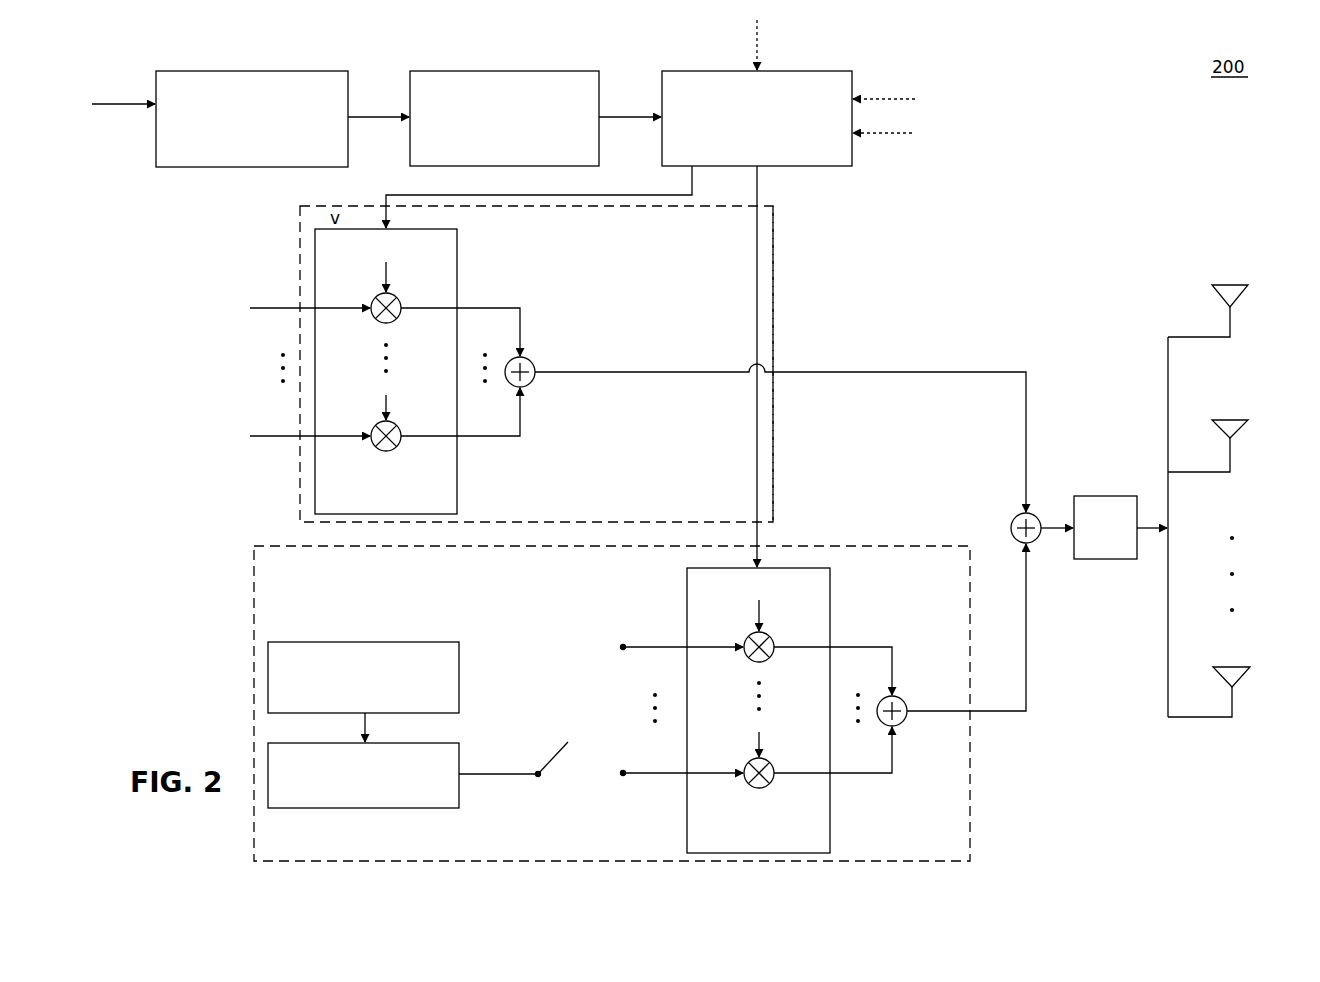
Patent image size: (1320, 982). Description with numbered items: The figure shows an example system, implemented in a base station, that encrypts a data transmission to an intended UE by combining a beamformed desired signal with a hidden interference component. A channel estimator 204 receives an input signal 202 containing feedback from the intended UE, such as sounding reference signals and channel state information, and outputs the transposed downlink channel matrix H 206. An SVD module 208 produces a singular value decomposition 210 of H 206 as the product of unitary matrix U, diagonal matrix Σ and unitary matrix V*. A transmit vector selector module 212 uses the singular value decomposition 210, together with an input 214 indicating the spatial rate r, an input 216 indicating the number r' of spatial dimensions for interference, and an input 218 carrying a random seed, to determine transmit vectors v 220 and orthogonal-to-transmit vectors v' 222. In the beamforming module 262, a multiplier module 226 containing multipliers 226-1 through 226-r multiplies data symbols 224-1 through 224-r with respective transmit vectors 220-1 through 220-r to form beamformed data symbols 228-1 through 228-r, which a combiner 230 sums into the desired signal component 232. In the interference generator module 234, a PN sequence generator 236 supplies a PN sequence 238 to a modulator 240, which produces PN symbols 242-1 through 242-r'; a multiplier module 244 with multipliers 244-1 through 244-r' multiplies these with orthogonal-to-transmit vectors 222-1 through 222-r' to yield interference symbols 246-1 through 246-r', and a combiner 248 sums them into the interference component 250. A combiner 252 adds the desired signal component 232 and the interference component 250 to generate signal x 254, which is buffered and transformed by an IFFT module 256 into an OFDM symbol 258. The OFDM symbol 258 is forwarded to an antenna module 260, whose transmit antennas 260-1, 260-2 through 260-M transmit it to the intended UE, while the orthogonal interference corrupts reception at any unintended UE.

The input signal 202 is at (120, 106).
The channel estimator 204 is at (252, 119).
The matrix H 206 is at (380, 119).
The singular value decomposition (SVD) module 208 is at (504, 118).
The singular value decomposition 210 is at (628, 119).
The transmit vector selector module 212 is at (757, 118).
The input indicating spatial rate r 214 is at (759, 48).
The input indicating number r' 216 is at (888, 97).
The random seed input 218 is at (882, 135).
The transmit vectors v 220 is at (614, 207).
The transmit vector v1 220-1 is at (386, 276).
The transmit vector vr 220-r is at (386, 404).
The orthogonal-to-transmit vectors v' 222 is at (757, 305).
The orthogonal-to-transmit vector v'1 222-1 is at (759, 614).
The orthogonal-to-transmit vector v'r' 222-r' is at (739, 735).
The data symbol s1 224-1 is at (262, 300).
The data symbol sr 224-r is at (265, 445).
The multiplier module 226 is at (458, 233).
The multiplier 226-1 is at (384, 324).
The multiplier 226-r is at (383, 452).
The beamformed data symbol 228-1 is at (508, 302).
The beamformed data symbol 228-r is at (505, 440).
The combiner 230 is at (533, 362).
The desired signal component 232 is at (1027, 380).
The interference generator module 234 is at (254, 584).
The pseudorandom noise (PN) sequence generator 236 is at (363, 677).
The PN sequence 238 is at (363, 734).
The modulator 240 is at (363, 775).
The PN symbol 242-1 is at (662, 642).
The PN symbol 242-r' is at (670, 809).
The multiplier module 244 is at (831, 572).
The multiplier 244-1 is at (753, 662).
The multiplier 244-r' is at (750, 801).
The interference symbol 246-1 is at (878, 642).
The interference symbol 246-r' is at (837, 784).
The combiner 248 is at (906, 701).
The interference component 250 is at (1027, 668).
The combiner 252 is at (1011, 526).
The signal x 254 is at (1056, 534).
The Inverse Fast Fourier Transform (IFFT) module 256 is at (1105, 527).
The OFDM symbol 258 is at (1150, 534).
The antenna module 260 is at (1175, 488).
The transmit antenna 260-1 is at (1222, 285).
The transmit antenna 260-2 is at (1222, 420).
The transmit antenna 260-M is at (1244, 672).
The beamforming module 262 is at (774, 248).